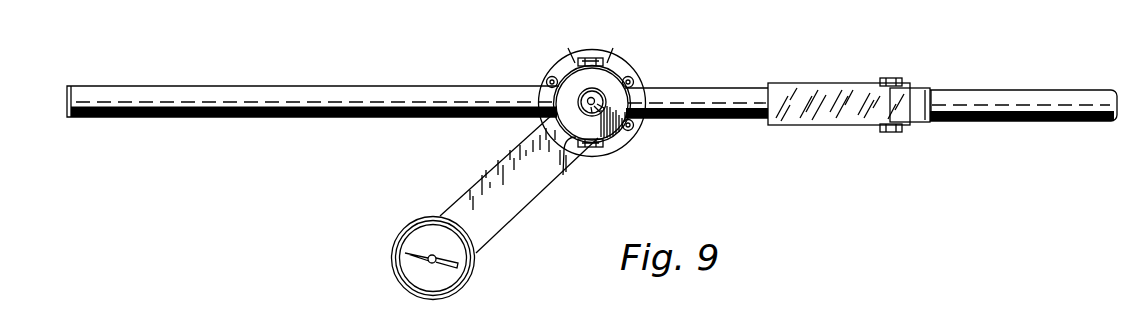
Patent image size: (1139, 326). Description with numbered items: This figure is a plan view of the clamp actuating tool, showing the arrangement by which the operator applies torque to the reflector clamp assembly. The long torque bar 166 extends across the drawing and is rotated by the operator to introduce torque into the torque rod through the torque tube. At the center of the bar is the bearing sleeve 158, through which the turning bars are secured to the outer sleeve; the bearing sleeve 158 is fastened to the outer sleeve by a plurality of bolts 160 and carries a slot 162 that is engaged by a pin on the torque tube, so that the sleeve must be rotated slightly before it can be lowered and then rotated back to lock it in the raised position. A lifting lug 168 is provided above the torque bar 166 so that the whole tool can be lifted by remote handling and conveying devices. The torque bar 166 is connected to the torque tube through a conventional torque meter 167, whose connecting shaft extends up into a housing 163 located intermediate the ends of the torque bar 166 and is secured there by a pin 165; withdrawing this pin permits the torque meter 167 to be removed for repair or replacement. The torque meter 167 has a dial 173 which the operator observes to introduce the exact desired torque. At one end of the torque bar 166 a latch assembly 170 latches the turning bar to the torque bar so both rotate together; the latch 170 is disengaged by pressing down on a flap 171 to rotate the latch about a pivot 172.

The bearing sleeve 158 is at (634, 70).
The bolts 160 is at (547, 81).
The slot 162 is at (608, 139).
The housing 163 is at (597, 139).
The pin 165 is at (593, 58).
The torque bar 166 is at (293, 118).
The torque meter 167 is at (480, 245).
The lifting lug 168 is at (578, 106).
The latch assembly 170 is at (835, 126).
The flap 171 is at (920, 92).
The pivot 172 is at (890, 134).
The dial 173 is at (398, 270).